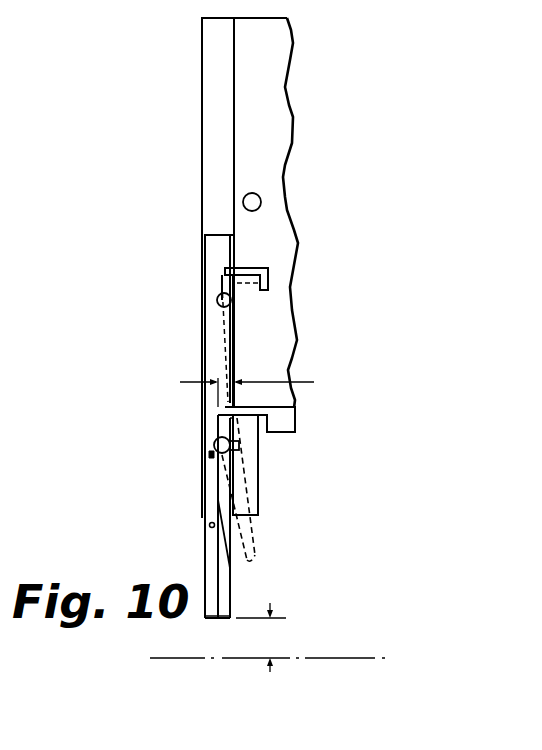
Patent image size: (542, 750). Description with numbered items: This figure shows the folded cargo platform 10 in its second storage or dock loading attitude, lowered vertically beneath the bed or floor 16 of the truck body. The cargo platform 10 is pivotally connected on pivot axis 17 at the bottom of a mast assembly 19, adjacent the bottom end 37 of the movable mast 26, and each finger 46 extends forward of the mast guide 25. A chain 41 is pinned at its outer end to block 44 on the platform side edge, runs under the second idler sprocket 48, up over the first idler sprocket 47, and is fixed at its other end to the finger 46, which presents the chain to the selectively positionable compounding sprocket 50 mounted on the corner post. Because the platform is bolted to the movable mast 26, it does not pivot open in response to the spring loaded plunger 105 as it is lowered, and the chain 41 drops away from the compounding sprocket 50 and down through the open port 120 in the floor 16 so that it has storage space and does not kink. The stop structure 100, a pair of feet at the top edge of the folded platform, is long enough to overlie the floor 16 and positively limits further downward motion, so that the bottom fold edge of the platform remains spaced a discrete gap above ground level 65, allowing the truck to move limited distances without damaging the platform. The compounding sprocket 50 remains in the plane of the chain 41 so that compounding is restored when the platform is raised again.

The cargo platform 10 is at (195, 529).
The bed or floor 16 is at (284, 403).
The pivot axis 17 is at (212, 613).
The mast assembly 19 is at (238, 235).
The mast guide 25 is at (215, 182).
The mast 26 is at (214, 245).
The bottom end of the mast 37 is at (216, 622).
The chain 41 is at (253, 545).
The block 44 is at (208, 456).
The finger 46 is at (268, 272).
The first idler sprocket 47 is at (218, 300).
The second idler sprocket 48 is at (214, 444).
The compounding sprocket 50 is at (261, 197).
The ground level 65 is at (341, 656).
The stop structure 100 is at (207, 397).
The spring loaded plunger 105 is at (206, 621).
The open port 120 is at (246, 424).